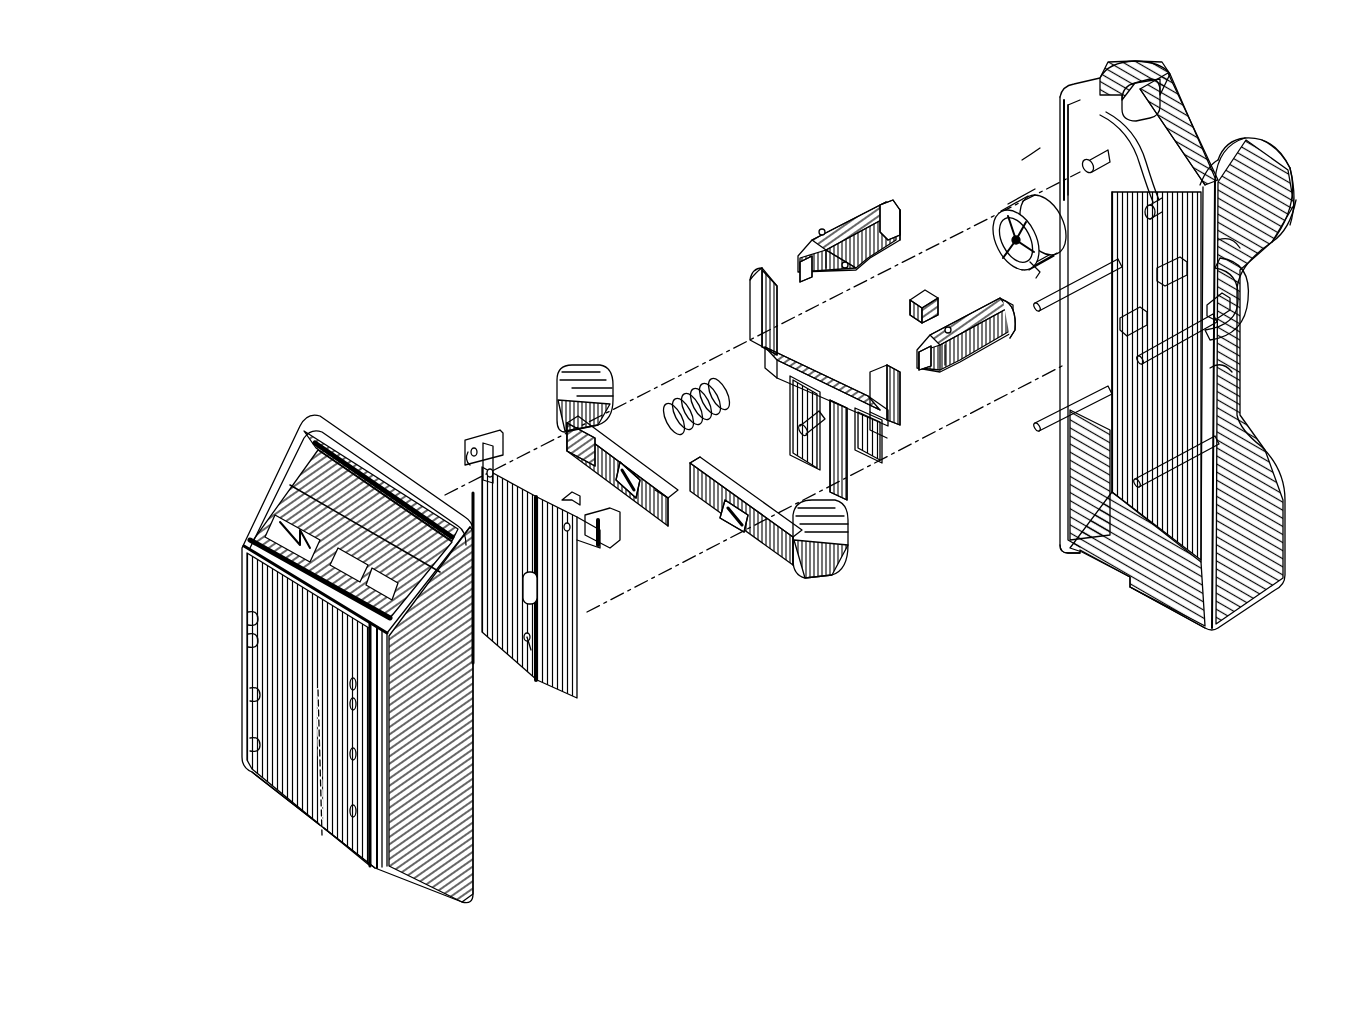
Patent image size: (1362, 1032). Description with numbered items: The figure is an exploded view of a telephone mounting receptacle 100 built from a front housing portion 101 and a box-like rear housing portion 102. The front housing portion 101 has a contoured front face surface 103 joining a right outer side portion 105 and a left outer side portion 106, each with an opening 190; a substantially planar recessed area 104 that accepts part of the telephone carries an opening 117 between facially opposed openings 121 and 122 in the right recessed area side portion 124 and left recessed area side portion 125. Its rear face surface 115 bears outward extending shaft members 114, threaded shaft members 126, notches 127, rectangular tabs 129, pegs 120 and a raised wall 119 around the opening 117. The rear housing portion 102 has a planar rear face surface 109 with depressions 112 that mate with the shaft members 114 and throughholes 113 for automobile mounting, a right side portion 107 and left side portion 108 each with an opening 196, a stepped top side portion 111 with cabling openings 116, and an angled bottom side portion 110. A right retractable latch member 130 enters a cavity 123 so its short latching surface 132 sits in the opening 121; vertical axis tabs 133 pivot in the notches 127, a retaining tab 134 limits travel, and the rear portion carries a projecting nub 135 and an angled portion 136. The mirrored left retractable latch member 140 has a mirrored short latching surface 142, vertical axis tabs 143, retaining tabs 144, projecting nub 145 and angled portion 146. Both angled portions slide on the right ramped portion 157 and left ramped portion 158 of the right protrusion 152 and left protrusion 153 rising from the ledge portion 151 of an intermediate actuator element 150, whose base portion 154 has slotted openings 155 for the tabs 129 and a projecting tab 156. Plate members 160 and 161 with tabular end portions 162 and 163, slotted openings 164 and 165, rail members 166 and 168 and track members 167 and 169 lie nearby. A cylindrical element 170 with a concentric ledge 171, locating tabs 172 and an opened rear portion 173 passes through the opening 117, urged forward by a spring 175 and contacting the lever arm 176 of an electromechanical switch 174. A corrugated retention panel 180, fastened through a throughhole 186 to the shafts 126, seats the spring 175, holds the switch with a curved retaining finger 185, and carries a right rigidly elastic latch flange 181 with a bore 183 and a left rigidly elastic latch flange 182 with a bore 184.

The telephone mounting receptacle 100 is at (935, 651).
The front housing portion 101 is at (1214, 636).
The rear housing portion 102 is at (370, 878).
The contoured front face surface 103 is at (1300, 130).
The substantially planar recessed area 104 is at (1197, 130).
The right outer side portion 105 is at (1062, 150).
The left outer side portion 106 is at (1270, 204).
The right side portion 107 is at (256, 775).
The left side portion 108 is at (462, 840).
The planar rear face surface 109 is at (305, 805).
The bottom side portion 110 is at (340, 840).
The top side portion 111 is at (278, 478).
The depressions 112 is at (247, 641).
The throughholes 113 is at (247, 618).
The outward extending shaft members 114 is at (1042, 308).
The rear face surface 115 is at (1062, 556).
The openings 116 is at (305, 525).
The opening 117 is at (1150, 210).
The raised wall 119 is at (1200, 138).
The pegs 120 is at (1228, 136).
The right facially opposed opening 121 is at (1172, 96).
The left facially opposed opening 122 is at (1282, 165).
The cavity 123 is at (1082, 162).
The right recessed area side portion 124 is at (1146, 90).
The left recessed area side portion 125 is at (1252, 140).
The threaded shaft members 126 is at (1100, 105).
The notches 127 is at (1062, 116).
The rectangular tabs 129 is at (1158, 282).
The right retractable latch member 130 is at (862, 210).
The short latching surface 132 is at (905, 228).
The vertical axis tabs 133 is at (838, 229).
The retaining tab 134 is at (885, 204).
The projecting nub 135 is at (835, 284).
The angled portion 136 is at (805, 276).
The left retractable latch member 140 is at (993, 382).
The mirrored short latching surface 142 is at (992, 310).
The mirrored pair of vertical axis tabs 143 is at (962, 362).
The mirrored pair of retaining tabs 144 is at (996, 320).
The mirrored projecting nub 145 is at (935, 362).
The mirrored angled portion 146 is at (965, 395).
The intermediate actuator element 150 is at (892, 448).
The ledge portion 151 is at (852, 378).
The right protrusion 152 is at (748, 321).
The left protrusion 153 is at (908, 426).
The base portion 154 is at (855, 496).
The rectangularly slotted openings 155 is at (790, 405).
The projecting tab 156 is at (796, 440).
The right ramped portion 157 is at (767, 268).
The left ramped portion 158 is at (878, 376).
The plate member 160 is at (570, 440).
The plate member 161 is at (765, 512).
The tabular end portion 162 is at (580, 368).
The tabular end portion 163 is at (836, 545).
The slotted opening 164 is at (628, 506).
The slotted opening 165 is at (728, 538).
The rail member 166 is at (663, 488).
The track member 167 is at (668, 510).
The rail member 168 is at (770, 572).
The track member 169 is at (703, 464).
The cylindrical element 170 is at (1010, 194).
The outward extending concentric ledge 171 is at (1032, 274).
The locating tabs 172 is at (1005, 210).
The opened rear portion 173 is at (1010, 250).
The electromechanical switch 174 is at (934, 294).
The spring 175 is at (662, 400).
The lever arm 176 is at (912, 309).
The retention panel 180 is at (581, 640).
The right rigidly elastic latch flange 181 is at (490, 433).
The left rigidly elastic latch flange 182 is at (600, 542).
The bore 183 is at (468, 453).
The bore 184 is at (612, 540).
The curved retaining finger 185 is at (572, 496).
The throughhole 186 is at (533, 645).
The opening 190 is at (1036, 146).
The opening 196 is at (310, 540).